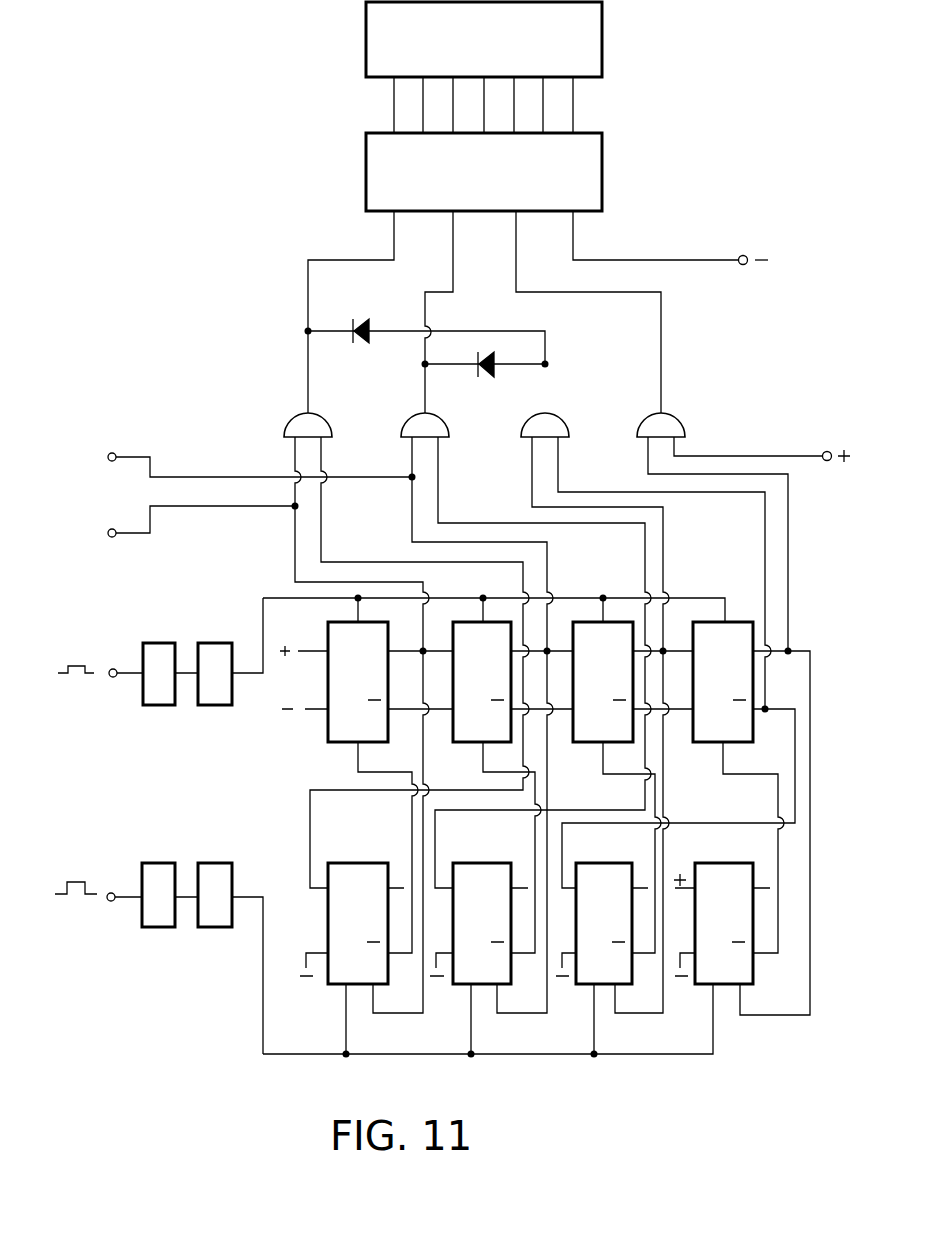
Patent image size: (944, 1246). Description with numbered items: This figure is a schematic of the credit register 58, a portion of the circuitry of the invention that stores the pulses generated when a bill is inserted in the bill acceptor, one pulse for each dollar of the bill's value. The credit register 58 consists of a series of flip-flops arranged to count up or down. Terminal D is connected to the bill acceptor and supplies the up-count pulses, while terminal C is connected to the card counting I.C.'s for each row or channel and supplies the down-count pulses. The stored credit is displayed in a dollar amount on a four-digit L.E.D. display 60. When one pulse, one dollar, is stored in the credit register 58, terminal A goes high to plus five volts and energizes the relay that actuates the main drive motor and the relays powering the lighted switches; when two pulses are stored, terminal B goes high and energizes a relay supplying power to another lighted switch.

The credit register 58 is at (745, 207).
The four-digit L.E.D. display 60 is at (590, 52).
The terminal A is at (193, 525).
The terminal B is at (252, 462).
The terminal C is at (159, 958).
The terminal D is at (160, 651).